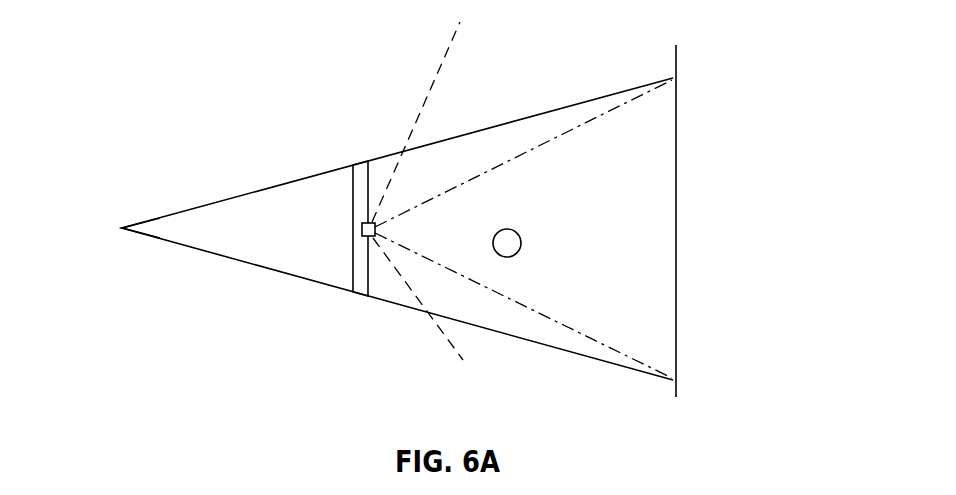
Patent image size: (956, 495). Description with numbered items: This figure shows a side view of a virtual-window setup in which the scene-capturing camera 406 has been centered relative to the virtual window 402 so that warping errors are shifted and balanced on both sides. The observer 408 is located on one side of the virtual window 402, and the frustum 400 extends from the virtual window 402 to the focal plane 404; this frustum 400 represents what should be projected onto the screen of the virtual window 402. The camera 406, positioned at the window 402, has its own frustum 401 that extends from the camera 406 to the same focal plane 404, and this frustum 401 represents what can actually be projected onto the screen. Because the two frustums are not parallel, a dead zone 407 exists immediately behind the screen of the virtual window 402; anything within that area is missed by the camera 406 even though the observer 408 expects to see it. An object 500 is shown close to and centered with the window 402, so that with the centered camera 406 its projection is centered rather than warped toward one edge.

The frustum 400 is at (535, 350).
The frustum 401 is at (502, 152).
The virtual window 402 is at (352, 300).
The focal plane 404 is at (682, 178).
The scene-capturing camera 406 is at (392, 232).
The dead zone 407 is at (388, 280).
The observer 408 is at (112, 230).
The object 500 is at (521, 228).